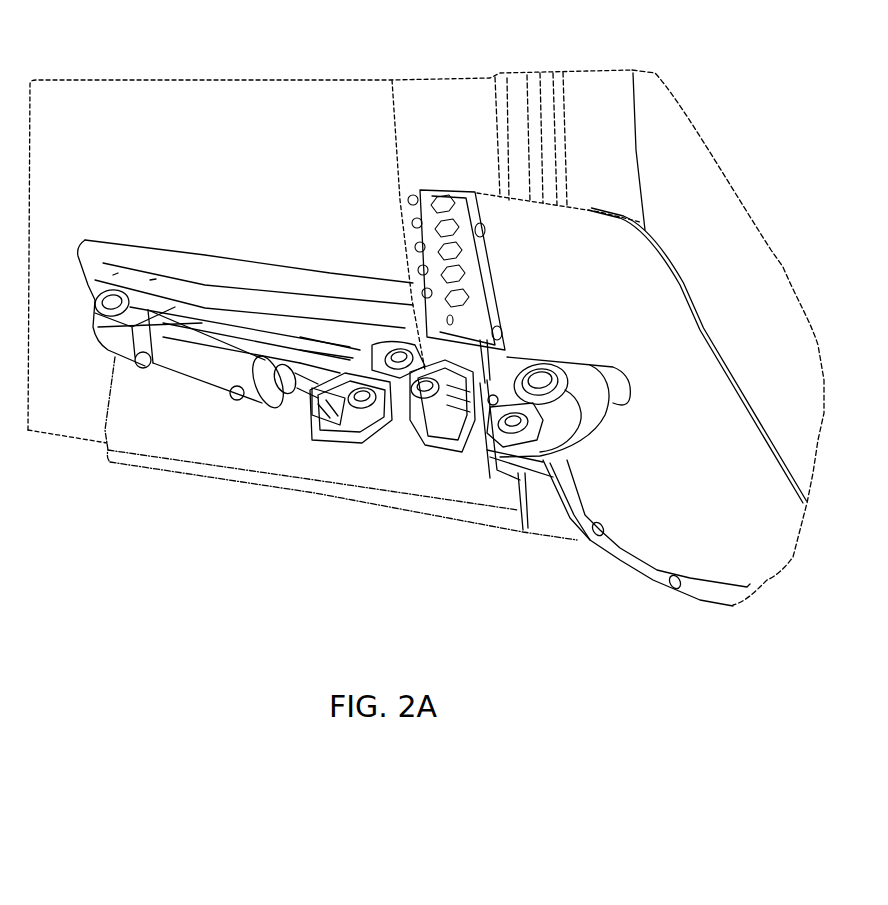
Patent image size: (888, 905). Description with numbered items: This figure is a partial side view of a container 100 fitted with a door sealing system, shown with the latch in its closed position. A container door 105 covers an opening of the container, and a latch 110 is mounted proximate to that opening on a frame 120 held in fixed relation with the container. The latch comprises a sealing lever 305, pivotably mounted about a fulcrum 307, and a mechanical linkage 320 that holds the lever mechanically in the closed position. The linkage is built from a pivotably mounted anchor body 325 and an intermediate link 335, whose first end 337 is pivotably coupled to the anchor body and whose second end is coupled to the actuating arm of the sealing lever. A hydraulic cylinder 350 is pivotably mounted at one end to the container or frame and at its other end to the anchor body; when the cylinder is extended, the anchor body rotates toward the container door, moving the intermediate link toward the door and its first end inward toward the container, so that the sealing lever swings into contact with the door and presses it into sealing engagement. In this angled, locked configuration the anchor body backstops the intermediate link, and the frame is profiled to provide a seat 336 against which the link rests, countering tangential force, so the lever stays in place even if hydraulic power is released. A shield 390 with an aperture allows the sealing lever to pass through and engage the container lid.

The container 100 is at (238, 127).
The container door 105 is at (712, 220).
The latch 110 is at (252, 433).
The frame 120 is at (238, 297).
The sealing lever 305 is at (563, 407).
The fulcrum 307 is at (540, 382).
The mechanical linkage 320 is at (362, 561).
The anchor body 325 is at (388, 422).
The intermediate link 335 is at (452, 443).
The seat 336 is at (477, 357).
The first end of the intermediate link 337 is at (445, 390).
The hydraulic cylinder 350 is at (213, 352).
The shield 390 is at (713, 508).